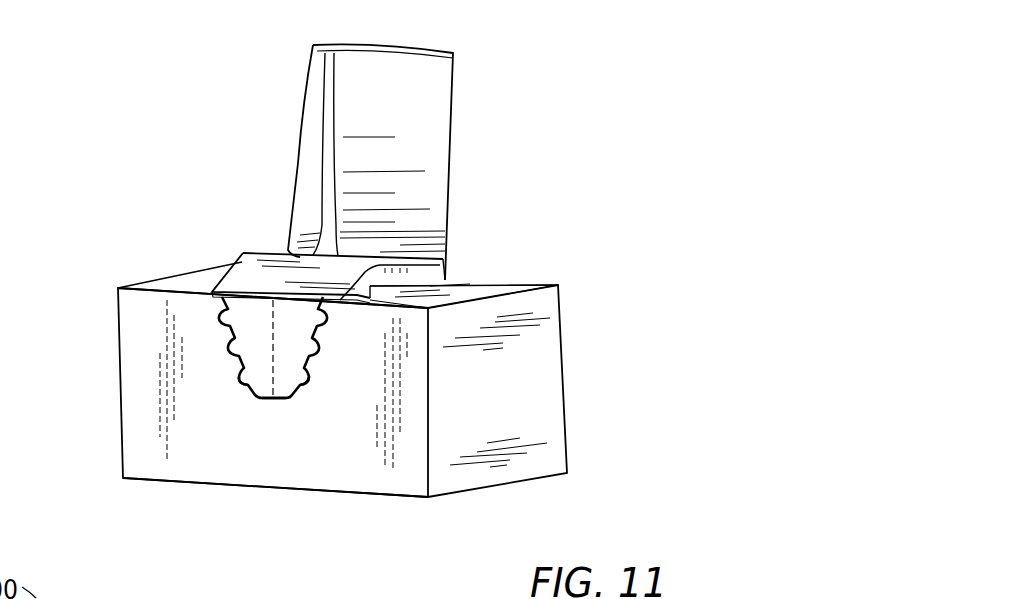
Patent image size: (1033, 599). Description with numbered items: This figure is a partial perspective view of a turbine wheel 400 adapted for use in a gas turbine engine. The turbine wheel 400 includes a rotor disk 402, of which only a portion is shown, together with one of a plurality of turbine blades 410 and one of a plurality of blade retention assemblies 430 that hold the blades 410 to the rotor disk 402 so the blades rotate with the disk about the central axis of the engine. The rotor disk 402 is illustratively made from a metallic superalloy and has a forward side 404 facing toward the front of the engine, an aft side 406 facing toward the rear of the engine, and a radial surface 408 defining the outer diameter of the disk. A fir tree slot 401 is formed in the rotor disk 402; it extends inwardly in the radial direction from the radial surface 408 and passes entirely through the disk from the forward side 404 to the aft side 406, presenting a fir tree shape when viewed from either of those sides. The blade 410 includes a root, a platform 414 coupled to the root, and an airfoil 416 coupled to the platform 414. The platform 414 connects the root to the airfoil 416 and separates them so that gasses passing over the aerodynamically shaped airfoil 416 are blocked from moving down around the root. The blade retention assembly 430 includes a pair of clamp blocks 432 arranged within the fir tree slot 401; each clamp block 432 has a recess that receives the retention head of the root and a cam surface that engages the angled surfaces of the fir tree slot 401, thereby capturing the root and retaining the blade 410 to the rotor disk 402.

The turbine wheel 400 is at (616, 88).
The fir tree slot 401 is at (273, 400).
The rotor disk 402 is at (570, 387).
The forward side 404 is at (410, 465).
The aft side 406 is at (562, 438).
The radial surface 408 is at (507, 287).
The turbine blade 410 is at (457, 177).
The platform 414 is at (242, 253).
The airfoil 416 is at (313, 150).
The blade retention assembly 430 is at (230, 353).
The clamp block 432 is at (267, 382).